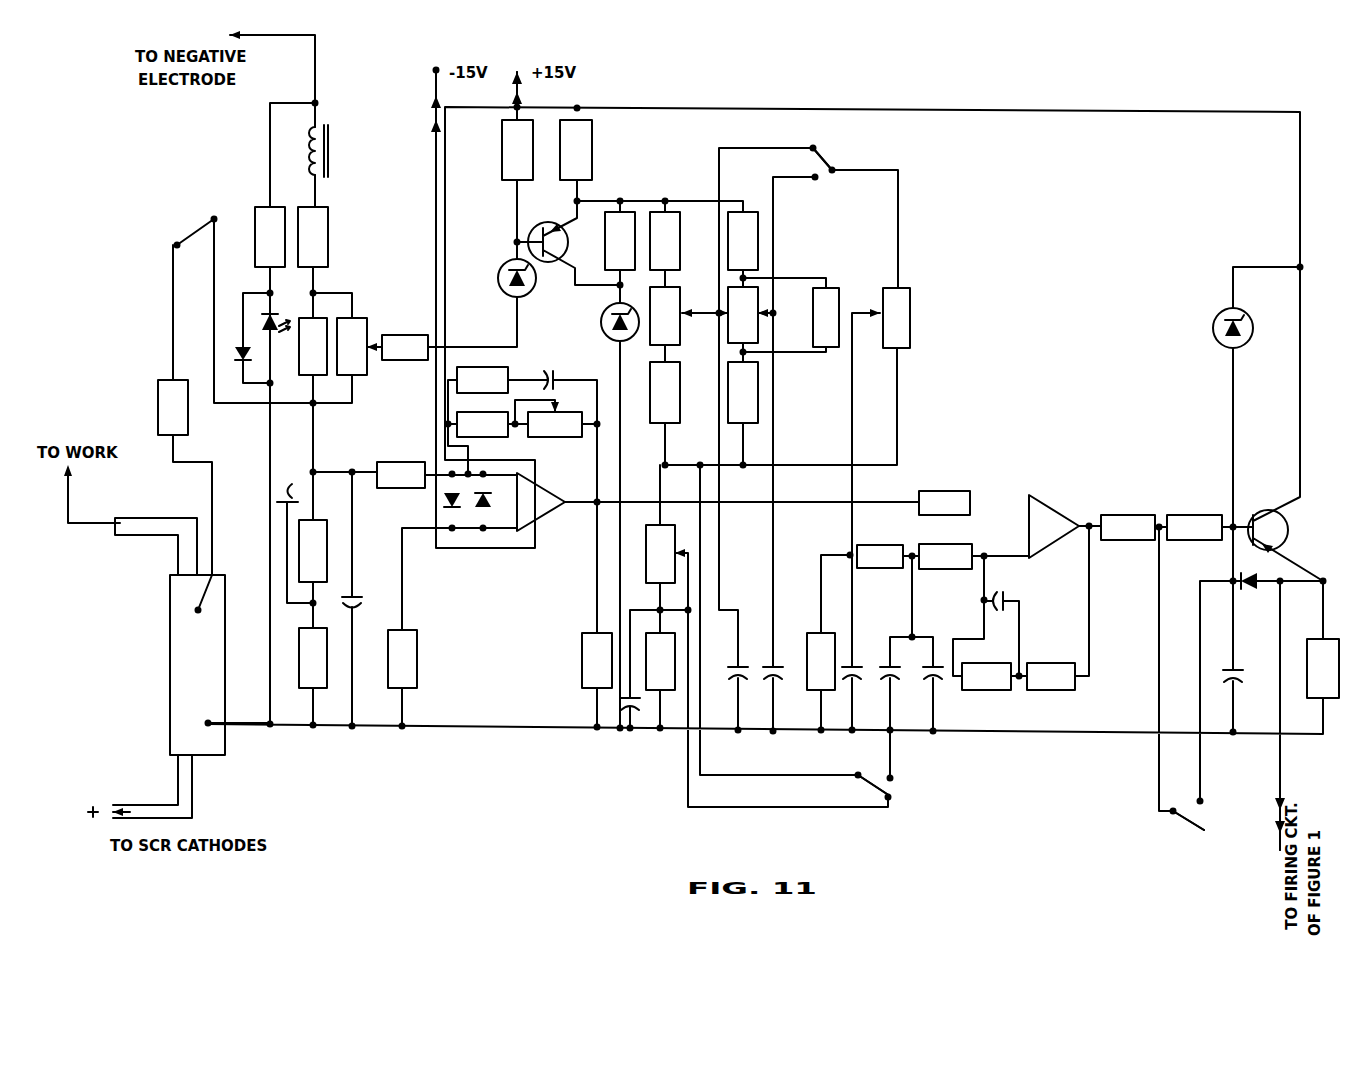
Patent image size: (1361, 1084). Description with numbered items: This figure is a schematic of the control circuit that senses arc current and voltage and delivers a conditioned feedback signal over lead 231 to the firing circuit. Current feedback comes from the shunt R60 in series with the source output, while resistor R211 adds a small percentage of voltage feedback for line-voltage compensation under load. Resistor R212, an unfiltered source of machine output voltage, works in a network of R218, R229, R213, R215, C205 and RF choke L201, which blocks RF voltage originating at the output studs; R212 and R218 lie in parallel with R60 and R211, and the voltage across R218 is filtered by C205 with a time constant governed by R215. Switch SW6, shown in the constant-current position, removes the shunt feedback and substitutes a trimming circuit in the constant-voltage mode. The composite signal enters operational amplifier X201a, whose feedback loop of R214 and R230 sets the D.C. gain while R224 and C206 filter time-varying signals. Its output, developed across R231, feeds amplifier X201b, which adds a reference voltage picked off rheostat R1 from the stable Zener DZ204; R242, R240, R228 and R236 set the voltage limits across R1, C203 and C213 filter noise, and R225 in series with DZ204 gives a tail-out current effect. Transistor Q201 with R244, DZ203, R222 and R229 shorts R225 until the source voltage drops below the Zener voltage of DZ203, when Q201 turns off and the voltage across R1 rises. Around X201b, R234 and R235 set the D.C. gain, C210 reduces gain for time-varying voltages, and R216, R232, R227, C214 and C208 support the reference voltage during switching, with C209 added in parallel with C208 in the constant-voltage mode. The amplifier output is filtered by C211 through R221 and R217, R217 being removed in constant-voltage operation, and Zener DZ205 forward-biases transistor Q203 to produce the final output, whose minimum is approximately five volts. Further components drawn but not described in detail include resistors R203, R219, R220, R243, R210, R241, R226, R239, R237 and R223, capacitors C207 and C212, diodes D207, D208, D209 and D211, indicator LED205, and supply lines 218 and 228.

The RF choke L201 is at (341, 151).
The resistor R203 is at (270, 237).
The resistor R215 is at (313, 237).
The resistor R211 is at (173, 407).
The resistor R213 is at (313, 346).
The resistor R229 is at (352, 346).
The resistor R222 is at (405, 347).
The light emitting diode LED205 is at (262, 322).
The diode D207 is at (232, 352).
The capacitor C205 is at (290, 477).
The resistor R218 is at (313, 551).
The resistor R212 is at (313, 658).
The resistor R219 is at (401, 475).
The capacitor C207 is at (364, 588).
The resistor R220 is at (402, 659).
The shunt R60 is at (185, 665).
The switch SW6 is at (678, 489).
The -15V supply line 218 is at (436, 78).
The +15V supply line 228 is at (517, 68).
The resistor R244 is at (517, 150).
The resistor R243 is at (576, 150).
The transistor Q201 is at (548, 218).
The Zener diode DZ203 is at (536, 290).
The resistor R225 is at (620, 241).
The resistor R242 is at (665, 241).
The Zener diode DZ204 is at (620, 356).
The resistor R240 is at (665, 316).
The resistor R228 is at (994, 530).
The resistor R210 is at (743, 241).
The potentiometer R241 is at (743, 315).
The resistor R226 is at (826, 317).
The resistor R239 is at (743, 392).
The potentiometer R1 is at (896, 318).
The resistor R224 is at (482, 380).
The resistor R214 is at (482, 424).
The resistor R230 is at (555, 424).
The capacitor C206 is at (552, 370).
The diode D208 is at (447, 512).
The diode D209 is at (492, 497).
The operational amplifier X201a is at (559, 504).
The resistor R231 is at (597, 660).
The capacitor C203 is at (637, 712).
The potentiometer R237 is at (660, 554).
The resistor R236 is at (660, 661).
The capacitor C212 is at (744, 649).
The capacitor C213 is at (776, 649).
The resistor R216 is at (821, 661).
The capacitor C214 is at (855, 649).
The capacitor C209 is at (887, 649).
The capacitor C208 is at (937, 649).
The resistor R232 is at (880, 556).
The resistor R227 is at (945, 556).
The resistor R223 is at (944, 503).
The operational amplifier X201b is at (1055, 517).
The capacitor C210 is at (1020, 591).
The resistor R234 is at (986, 676).
The resistor R235 is at (1051, 676).
The resistor R221 is at (1128, 527).
The resistor R217 is at (1194, 527).
The transistor Q203 is at (1263, 516).
The Zener diode DZ205 is at (1200, 320).
The diode D211 is at (1258, 592).
The capacitor C211 is at (1241, 654).
The output line to firing circuit 231 is at (1265, 837).